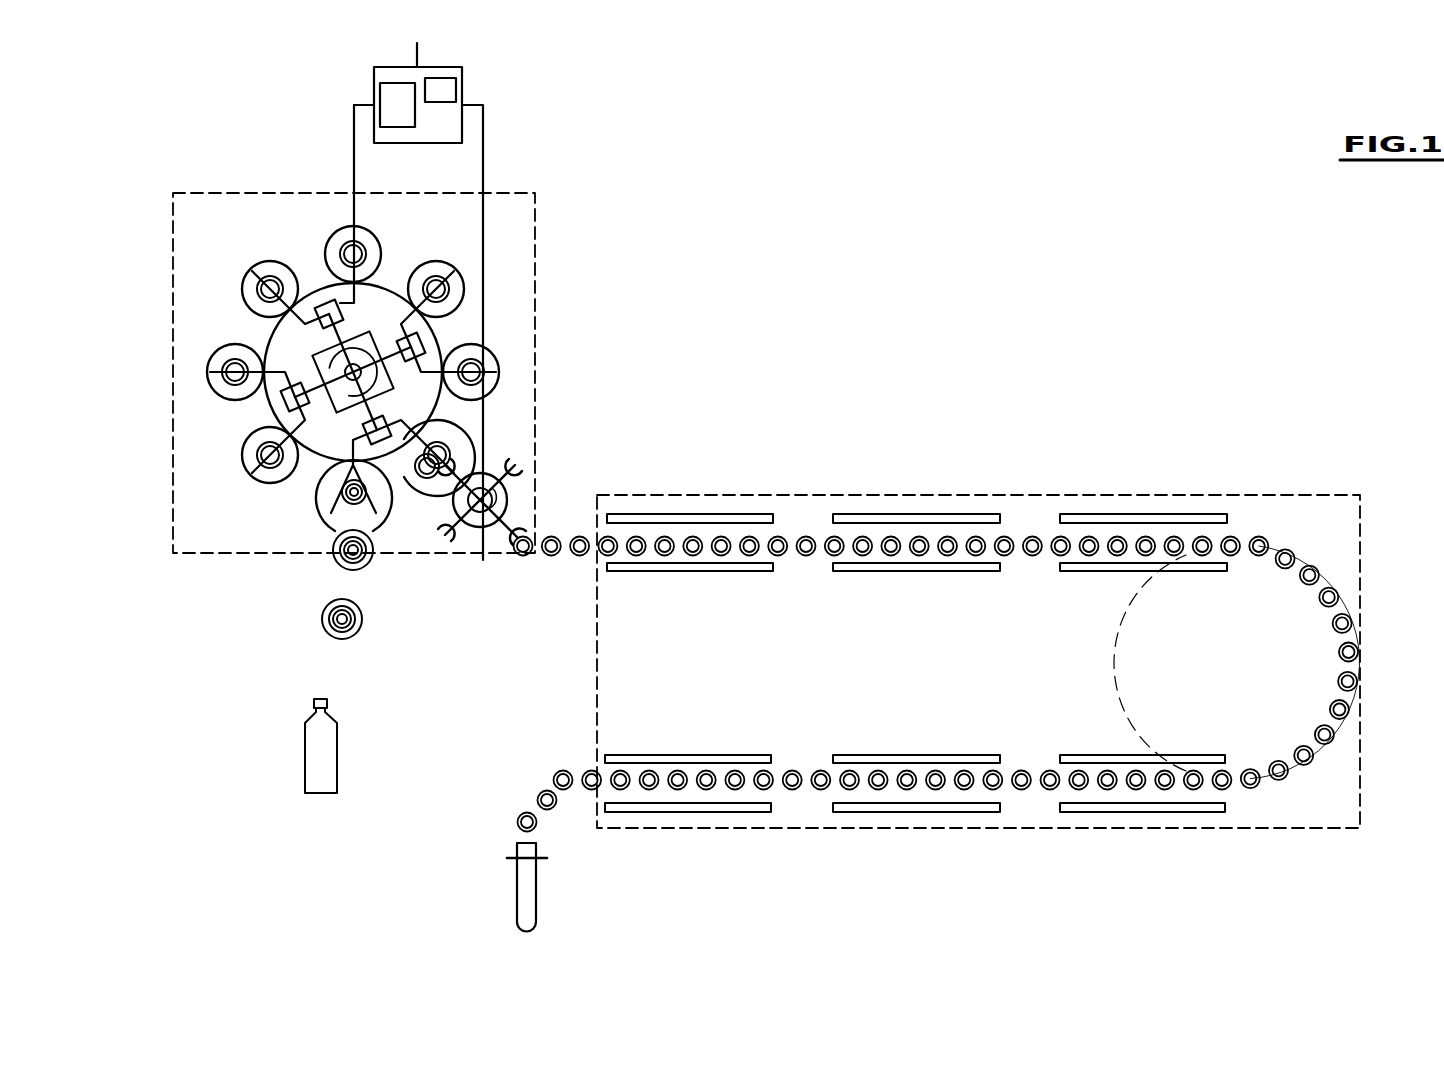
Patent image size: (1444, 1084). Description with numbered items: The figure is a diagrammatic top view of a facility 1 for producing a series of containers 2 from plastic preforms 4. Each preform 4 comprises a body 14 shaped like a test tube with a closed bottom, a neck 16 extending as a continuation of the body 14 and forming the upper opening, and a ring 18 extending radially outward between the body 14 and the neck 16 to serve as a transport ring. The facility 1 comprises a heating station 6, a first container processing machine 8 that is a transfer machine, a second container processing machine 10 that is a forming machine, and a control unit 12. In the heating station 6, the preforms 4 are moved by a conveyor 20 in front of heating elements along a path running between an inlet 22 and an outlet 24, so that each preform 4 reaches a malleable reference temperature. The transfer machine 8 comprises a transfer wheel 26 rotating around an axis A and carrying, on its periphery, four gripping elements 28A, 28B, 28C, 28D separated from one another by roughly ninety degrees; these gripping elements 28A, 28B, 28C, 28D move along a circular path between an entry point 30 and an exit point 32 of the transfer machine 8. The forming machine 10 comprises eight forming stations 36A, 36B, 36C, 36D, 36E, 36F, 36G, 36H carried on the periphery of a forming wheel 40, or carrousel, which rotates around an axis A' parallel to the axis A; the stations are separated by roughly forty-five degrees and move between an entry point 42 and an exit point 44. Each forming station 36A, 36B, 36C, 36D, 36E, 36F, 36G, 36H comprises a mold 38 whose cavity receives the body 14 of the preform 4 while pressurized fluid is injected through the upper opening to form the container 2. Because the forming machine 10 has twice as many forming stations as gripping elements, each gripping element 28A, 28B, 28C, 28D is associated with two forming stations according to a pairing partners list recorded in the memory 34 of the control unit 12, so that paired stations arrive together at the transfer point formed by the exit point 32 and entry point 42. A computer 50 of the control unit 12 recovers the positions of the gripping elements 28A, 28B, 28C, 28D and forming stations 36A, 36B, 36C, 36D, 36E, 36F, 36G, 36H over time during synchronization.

The facility 1 is at (1018, 204).
The container 2 is at (328, 628).
The preform 4 is at (773, 514).
The heating station 6 is at (1390, 608).
The first container processing machine 8 is at (612, 475).
The second container processing machine 10 is at (152, 159).
The control unit 12 is at (505, 80).
The body 14 is at (517, 910).
The neck 16 is at (545, 858).
The ring 18 is at (513, 858).
The conveyor 20 is at (902, 572).
The inlet 22 is at (575, 756).
The outlet 24 is at (595, 573).
The transfer wheel 26 is at (466, 543).
The gripping element 28A is at (518, 540).
The gripping element 28B is at (525, 455).
The gripping element 28C is at (448, 458).
The gripping element 28D is at (438, 543).
The entry point 30 is at (577, 563).
The exit point 32 is at (470, 475).
The memory 34 is at (380, 92).
The forming station 36A is at (445, 272).
The forming station 36B is at (483, 355).
The forming station 36C is at (460, 437).
The forming station 36D is at (378, 500).
The forming station 36E is at (250, 463).
The forming station 36F is at (213, 366).
The forming station 36G is at (272, 272).
The forming station 36H is at (360, 204).
The mold 38 is at (322, 505).
The forming wheel 40 is at (315, 297).
The entry point 42 is at (441, 490).
The exit point 44 is at (330, 525).
The computer 50 is at (452, 88).